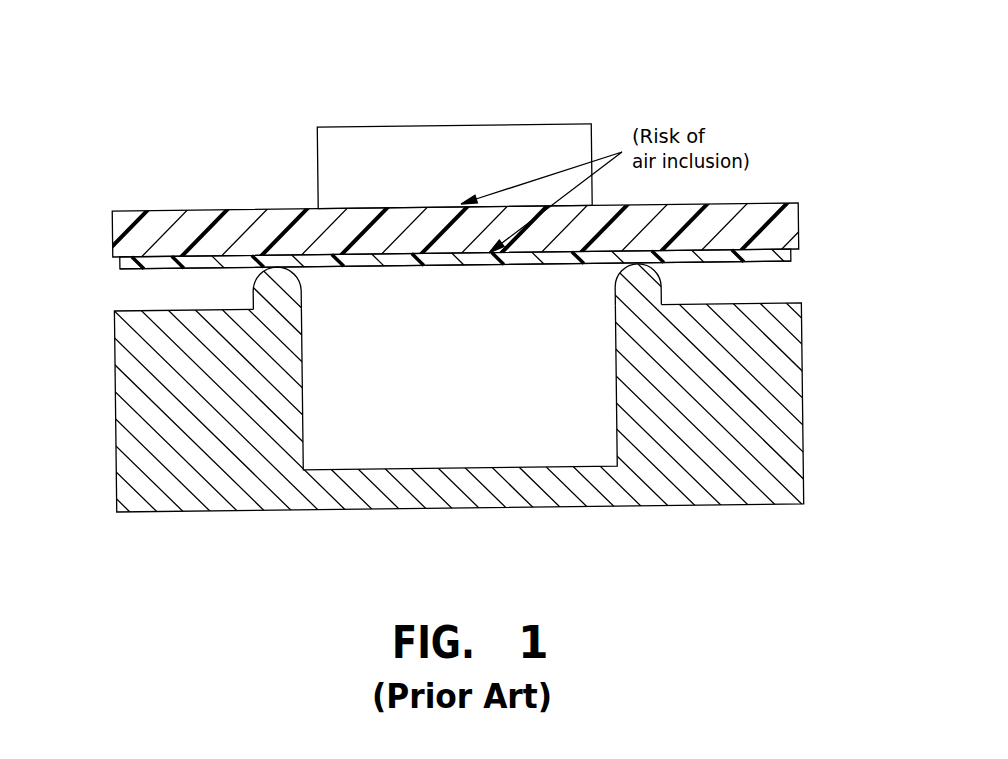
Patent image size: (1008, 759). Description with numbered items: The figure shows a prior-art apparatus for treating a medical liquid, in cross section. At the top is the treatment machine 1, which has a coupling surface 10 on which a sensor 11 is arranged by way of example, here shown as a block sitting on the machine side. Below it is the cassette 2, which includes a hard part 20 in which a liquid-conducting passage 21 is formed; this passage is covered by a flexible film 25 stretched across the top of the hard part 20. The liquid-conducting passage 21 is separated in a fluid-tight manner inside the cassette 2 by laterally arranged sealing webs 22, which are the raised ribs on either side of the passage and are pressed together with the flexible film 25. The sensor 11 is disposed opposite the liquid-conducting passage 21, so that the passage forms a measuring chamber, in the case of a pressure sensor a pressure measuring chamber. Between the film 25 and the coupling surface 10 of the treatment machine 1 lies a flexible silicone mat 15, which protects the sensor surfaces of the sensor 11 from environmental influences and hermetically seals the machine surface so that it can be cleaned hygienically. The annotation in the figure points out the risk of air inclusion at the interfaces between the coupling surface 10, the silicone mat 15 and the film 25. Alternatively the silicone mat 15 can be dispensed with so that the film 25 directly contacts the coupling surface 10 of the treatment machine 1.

The treatment machine 1 is at (461, 172).
The cassette 2 is at (504, 416).
The coupling surface 10 is at (182, 210).
The sensor 11 is at (457, 147).
The flexible silicone mat 15 is at (130, 232).
The hard part 20 is at (725, 492).
The liquid-conducting passage 21 is at (483, 458).
The sealing webs 22 is at (638, 280).
The flexible film 25 is at (794, 256).